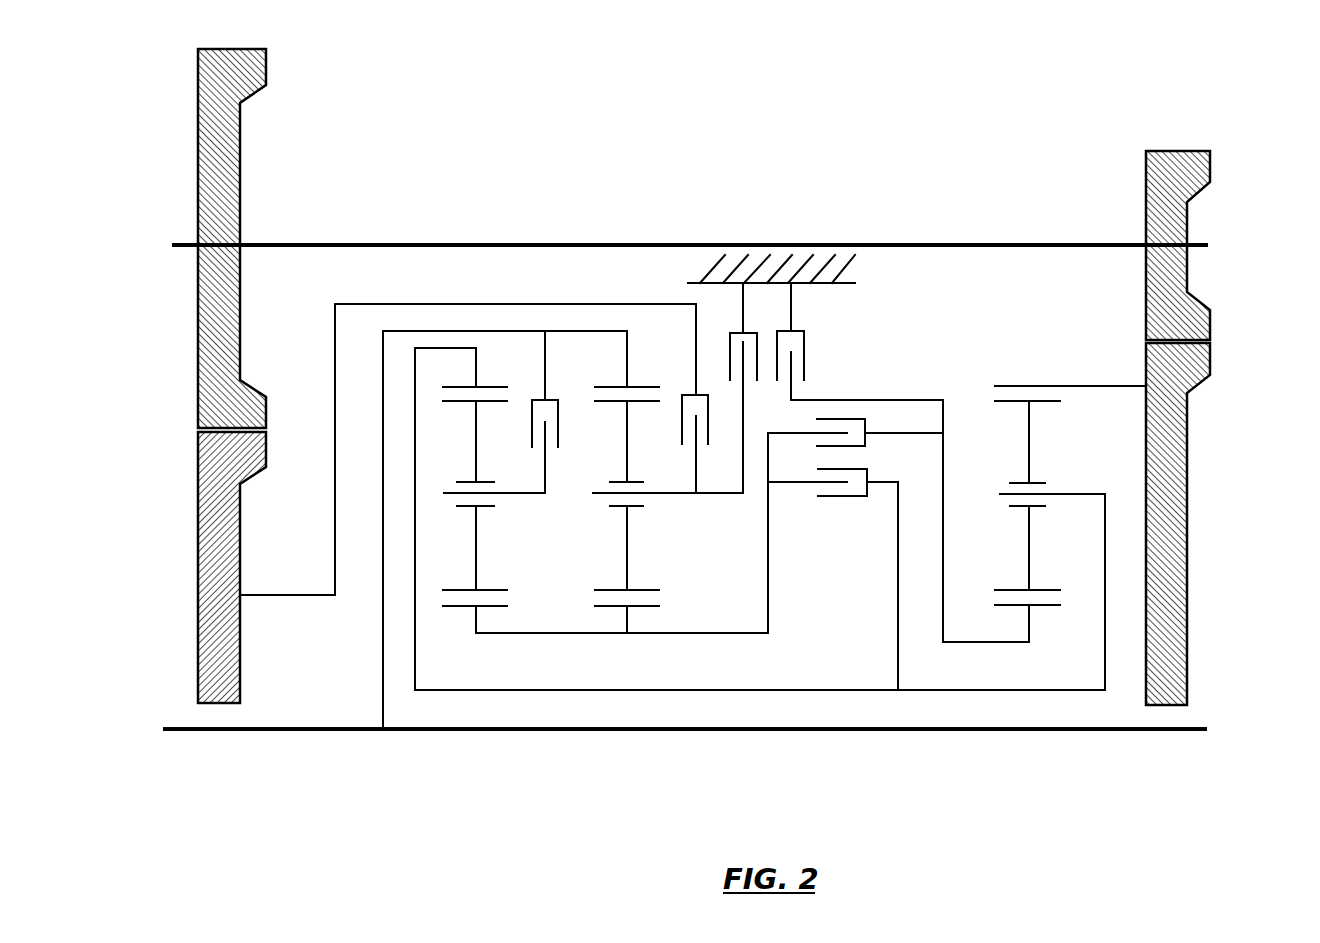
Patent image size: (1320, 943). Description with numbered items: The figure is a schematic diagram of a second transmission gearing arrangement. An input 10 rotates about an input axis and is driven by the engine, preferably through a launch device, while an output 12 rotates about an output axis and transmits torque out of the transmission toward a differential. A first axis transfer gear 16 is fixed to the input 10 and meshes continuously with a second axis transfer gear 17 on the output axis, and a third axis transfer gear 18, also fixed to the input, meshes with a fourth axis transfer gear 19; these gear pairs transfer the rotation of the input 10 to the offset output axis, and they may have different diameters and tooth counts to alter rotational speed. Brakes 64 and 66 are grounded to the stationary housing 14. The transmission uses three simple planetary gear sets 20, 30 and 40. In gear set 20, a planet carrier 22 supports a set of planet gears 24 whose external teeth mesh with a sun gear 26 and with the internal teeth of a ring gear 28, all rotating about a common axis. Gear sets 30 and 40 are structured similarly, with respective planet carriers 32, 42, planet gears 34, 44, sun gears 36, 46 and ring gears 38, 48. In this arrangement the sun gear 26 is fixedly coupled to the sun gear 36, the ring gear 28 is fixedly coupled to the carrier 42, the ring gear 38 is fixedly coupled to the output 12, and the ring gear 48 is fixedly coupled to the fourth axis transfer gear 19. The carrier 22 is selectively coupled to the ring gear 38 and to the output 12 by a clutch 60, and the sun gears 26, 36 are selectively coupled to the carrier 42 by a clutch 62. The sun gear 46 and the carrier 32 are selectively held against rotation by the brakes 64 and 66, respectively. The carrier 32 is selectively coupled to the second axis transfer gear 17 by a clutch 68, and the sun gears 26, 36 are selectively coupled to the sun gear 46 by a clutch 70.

The input 10 is at (492, 242).
The output 12 is at (790, 731).
The transmission housing 14 is at (858, 263).
The first axis transfer gear 16 is at (245, 157).
The second axis transfer gear 17 is at (240, 678).
The third axis transfer gear 18 is at (1187, 268).
The fourth axis transfer gear 19 is at (1188, 495).
The simple planetary gear set 20 is at (504, 547).
The planet carrier 22 is at (507, 495).
The planet gears 24 is at (475, 447).
The sun gear 26 is at (477, 635).
The ring gear 28 is at (478, 357).
The simple planetary gear set 30 is at (662, 551).
The planet carrier 32 is at (658, 495).
The planet gears 34 is at (627, 450).
The sun gear 36 is at (628, 635).
The ring gear 38 is at (628, 357).
The simple planetary gear set 40 is at (1055, 564).
The planet carrier 42 is at (1078, 492).
The planet gears 44 is at (1028, 447).
The sun gear 46 is at (1032, 640).
The ring gear 48 is at (1067, 385).
The clutch 60 is at (505, 530).
The clutch 62 is at (760, 579).
The brake 64 is at (903, 462).
The brake 66 is at (733, 388).
The clutch 68 is at (704, 444).
The clutch 70 is at (855, 526).